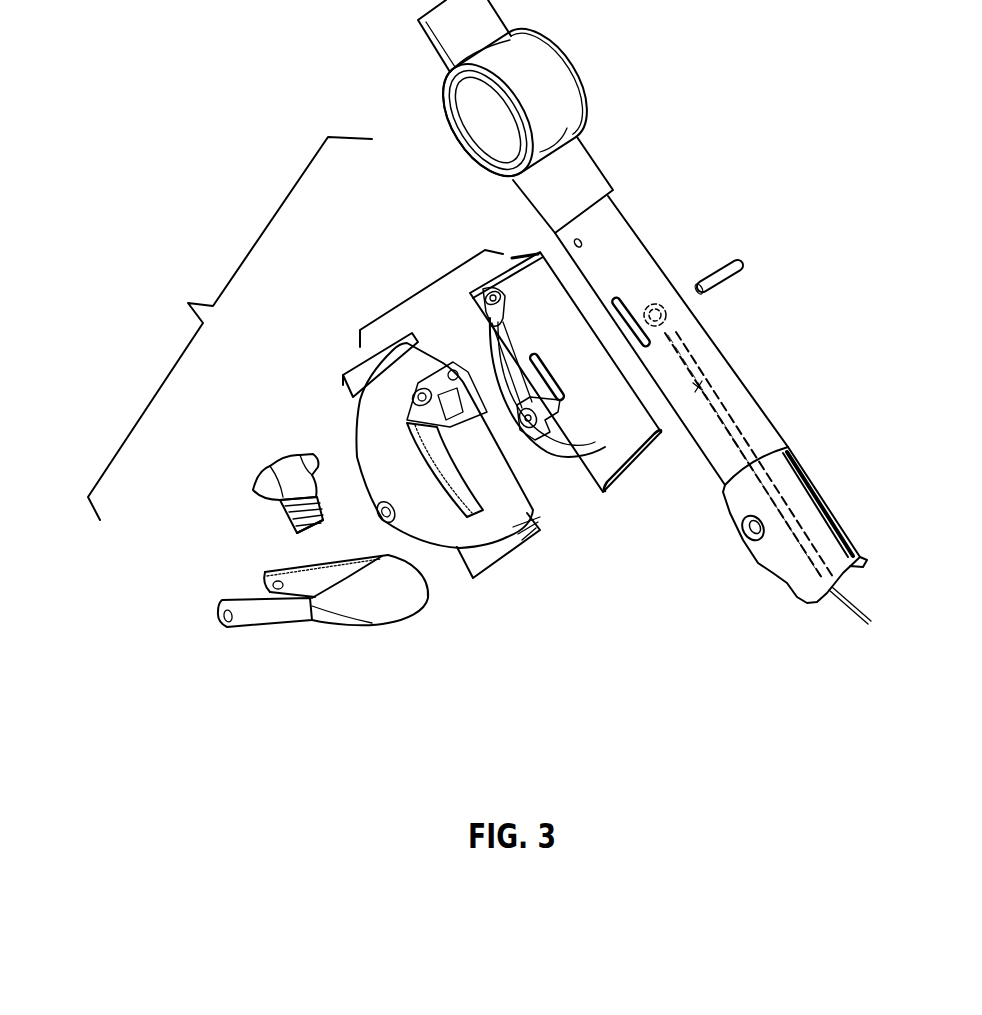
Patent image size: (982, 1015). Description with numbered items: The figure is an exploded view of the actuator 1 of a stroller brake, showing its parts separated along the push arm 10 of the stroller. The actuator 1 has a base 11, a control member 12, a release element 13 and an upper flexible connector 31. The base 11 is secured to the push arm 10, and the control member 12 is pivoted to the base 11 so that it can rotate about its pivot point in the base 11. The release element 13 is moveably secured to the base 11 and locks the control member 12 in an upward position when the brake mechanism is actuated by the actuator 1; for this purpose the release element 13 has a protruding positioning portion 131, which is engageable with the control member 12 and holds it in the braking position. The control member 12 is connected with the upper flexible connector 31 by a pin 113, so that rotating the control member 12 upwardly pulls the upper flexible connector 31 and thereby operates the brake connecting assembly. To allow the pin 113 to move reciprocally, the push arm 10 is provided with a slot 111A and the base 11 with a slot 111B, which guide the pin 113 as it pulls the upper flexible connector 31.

The actuator 1 is at (160, 280).
The push arm 10 is at (753, 421).
The base 11 is at (418, 285).
The slot 111A is at (620, 301).
The slot 111B is at (545, 372).
The pin 113 is at (736, 280).
The control member 12 is at (378, 605).
The release element 13 is at (270, 477).
The protruding positioning portion 131 is at (320, 543).
The upper flexible connector 31 is at (698, 386).